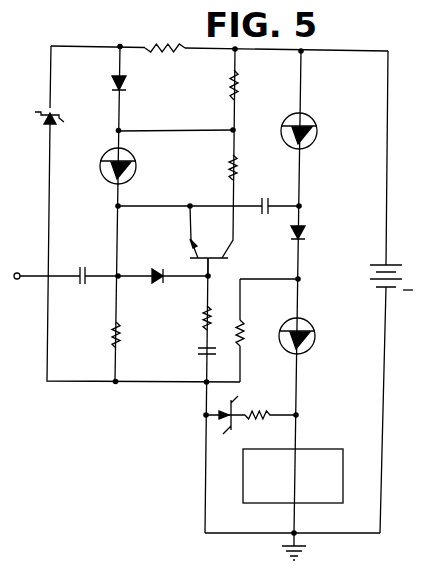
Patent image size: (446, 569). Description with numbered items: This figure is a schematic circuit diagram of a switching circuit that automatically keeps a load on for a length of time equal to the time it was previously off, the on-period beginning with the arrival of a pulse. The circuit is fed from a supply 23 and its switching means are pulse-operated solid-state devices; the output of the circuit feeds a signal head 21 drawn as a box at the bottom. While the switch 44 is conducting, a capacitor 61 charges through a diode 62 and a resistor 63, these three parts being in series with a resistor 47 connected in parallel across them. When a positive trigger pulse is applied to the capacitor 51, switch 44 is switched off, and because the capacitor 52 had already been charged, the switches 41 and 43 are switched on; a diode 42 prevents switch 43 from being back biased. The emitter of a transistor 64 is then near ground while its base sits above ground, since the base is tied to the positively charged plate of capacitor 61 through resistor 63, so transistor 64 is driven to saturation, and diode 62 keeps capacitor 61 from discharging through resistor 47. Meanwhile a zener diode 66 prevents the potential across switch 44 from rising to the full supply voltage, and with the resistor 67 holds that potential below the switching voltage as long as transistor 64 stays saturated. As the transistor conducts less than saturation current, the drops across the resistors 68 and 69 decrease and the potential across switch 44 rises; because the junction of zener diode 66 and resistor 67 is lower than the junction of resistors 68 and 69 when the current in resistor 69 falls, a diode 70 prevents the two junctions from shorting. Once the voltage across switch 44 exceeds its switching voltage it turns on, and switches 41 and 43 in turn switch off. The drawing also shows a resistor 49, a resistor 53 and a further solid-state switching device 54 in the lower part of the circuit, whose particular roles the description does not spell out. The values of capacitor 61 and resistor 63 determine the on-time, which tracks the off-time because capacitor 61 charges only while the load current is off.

The signal head 21 is at (323, 437).
The supply 23 is at (373, 268).
The switch 41 is at (315, 132).
The diode 42 is at (302, 236).
The switch 43 is at (311, 329).
The switch 44 is at (131, 171).
The resistor 47 is at (112, 335).
The resistor 49 is at (243, 326).
The capacitor 51 is at (86, 281).
The capacitor 52 is at (270, 203).
The resistor 53 is at (250, 413).
The transistor 54 is at (230, 405).
The capacitor 61 is at (198, 350).
The diode 62 is at (164, 281).
The resistor 63 is at (202, 320).
The transistor 64 is at (231, 254).
The zener diode 66 is at (52, 114).
The resistor 67 is at (176, 44).
The resistor 68 is at (238, 168).
The resistor 69 is at (238, 89).
The diode 70 is at (122, 90).